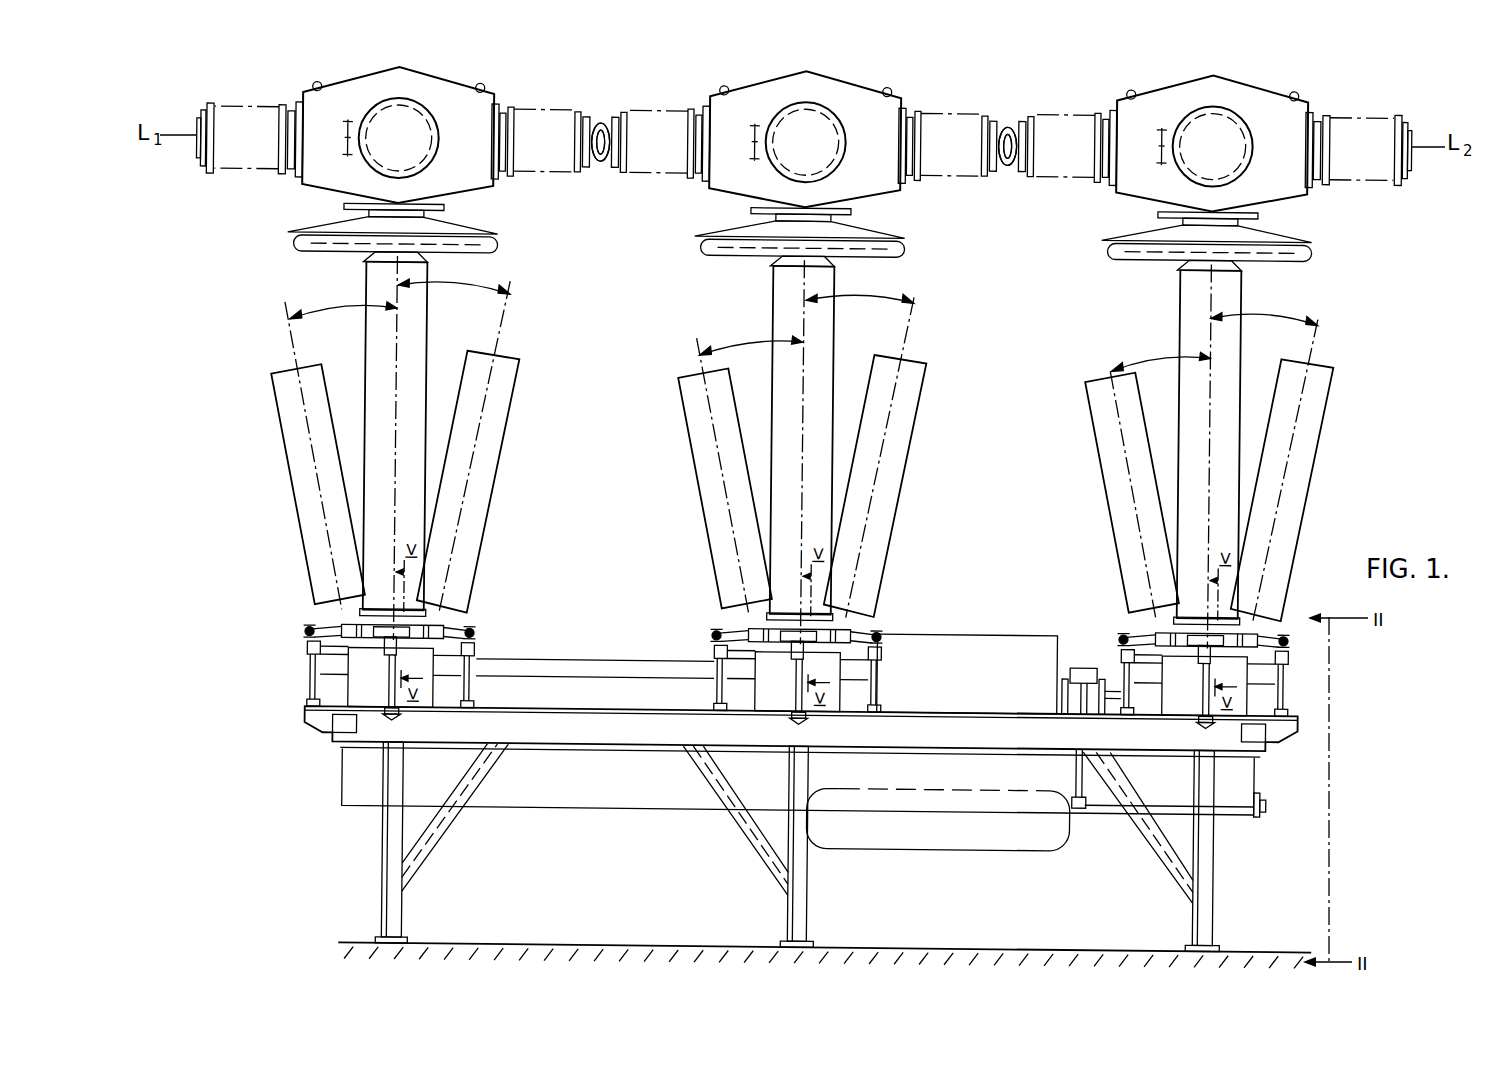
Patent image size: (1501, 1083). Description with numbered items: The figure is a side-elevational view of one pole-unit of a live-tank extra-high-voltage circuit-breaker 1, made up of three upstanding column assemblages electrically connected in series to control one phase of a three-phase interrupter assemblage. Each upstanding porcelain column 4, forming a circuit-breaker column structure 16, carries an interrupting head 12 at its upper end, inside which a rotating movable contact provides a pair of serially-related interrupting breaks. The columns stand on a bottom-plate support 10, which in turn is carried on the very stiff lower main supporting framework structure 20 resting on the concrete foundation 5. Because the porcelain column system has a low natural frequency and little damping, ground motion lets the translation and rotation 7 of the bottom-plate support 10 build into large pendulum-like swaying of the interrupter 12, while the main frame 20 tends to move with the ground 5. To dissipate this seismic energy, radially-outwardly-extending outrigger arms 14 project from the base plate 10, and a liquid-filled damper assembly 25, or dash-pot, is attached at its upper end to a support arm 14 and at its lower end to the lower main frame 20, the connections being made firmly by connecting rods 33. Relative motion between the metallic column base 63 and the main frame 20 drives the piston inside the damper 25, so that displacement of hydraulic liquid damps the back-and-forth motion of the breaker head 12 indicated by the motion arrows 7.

The circuit-breaker 1 is at (1022, 350).
The upstanding porcelain column 4 is at (366, 335).
The concrete foundation 5 is at (1252, 950).
The rotation of the bottom-plate support 7 is at (330, 307).
The bottom-plate support 10 is at (870, 625).
The interrupter 12 is at (425, 87).
The outrigger arms 14 is at (313, 628).
The circuit-breaker column structure 16 is at (428, 323).
The main supporting framework structure 20 is at (807, 882).
The liquid-filled damper assembly 25 is at (481, 646).
The connecting rod 33 is at (392, 679).
The metallic column base 63 is at (437, 685).